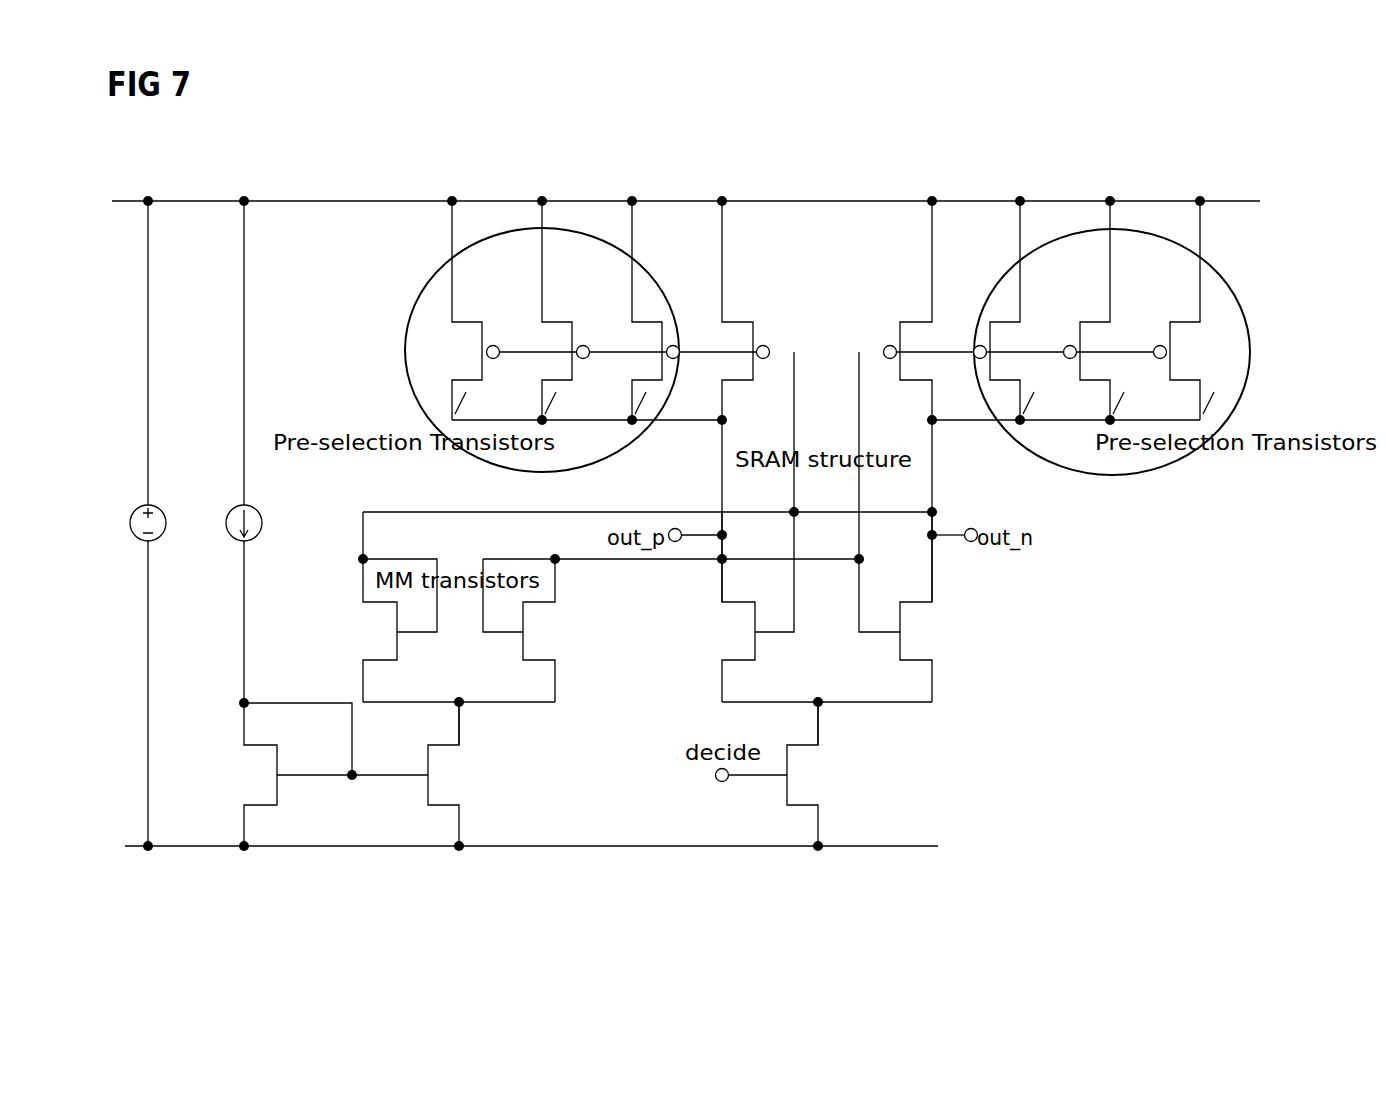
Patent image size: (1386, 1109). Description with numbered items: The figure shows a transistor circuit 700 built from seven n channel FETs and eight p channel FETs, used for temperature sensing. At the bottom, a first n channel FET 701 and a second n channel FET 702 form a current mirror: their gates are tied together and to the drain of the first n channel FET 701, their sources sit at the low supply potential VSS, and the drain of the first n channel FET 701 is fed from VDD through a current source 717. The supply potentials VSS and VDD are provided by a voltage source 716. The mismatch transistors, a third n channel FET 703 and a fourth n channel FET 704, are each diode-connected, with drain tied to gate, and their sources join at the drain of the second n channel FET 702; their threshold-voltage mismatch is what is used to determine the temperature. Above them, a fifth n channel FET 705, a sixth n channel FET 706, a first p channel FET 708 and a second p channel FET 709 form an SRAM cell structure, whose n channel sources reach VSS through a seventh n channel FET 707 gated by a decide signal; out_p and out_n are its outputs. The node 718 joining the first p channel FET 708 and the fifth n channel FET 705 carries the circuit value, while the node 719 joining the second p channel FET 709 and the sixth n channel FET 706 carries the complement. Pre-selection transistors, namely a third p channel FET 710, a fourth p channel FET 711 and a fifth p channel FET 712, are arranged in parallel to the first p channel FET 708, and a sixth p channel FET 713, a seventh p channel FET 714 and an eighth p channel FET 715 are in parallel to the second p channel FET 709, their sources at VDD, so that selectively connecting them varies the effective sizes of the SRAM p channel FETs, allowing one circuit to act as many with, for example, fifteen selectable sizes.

The transistor circuit 700 is at (1293, 148).
The first n channel FET 701 is at (245, 758).
The second n channel FET 702 is at (458, 758).
The third n channel FET 703 is at (356, 612).
The fourth n channel FET 704 is at (555, 617).
The fifth n channel FET 705 is at (715, 612).
The sixth n channel FET 706 is at (937, 615).
The seventh n channel FET 707 is at (822, 758).
The first p channel FET 708 is at (760, 330).
The second p channel FET 709 is at (897, 328).
The third p channel FET 710 is at (500, 300).
The fourth p channel FET 711 is at (592, 300).
The fifth p channel FET 712 is at (643, 305).
The sixth p channel FET 713 is at (1003, 312).
The seventh p channel FET 714 is at (1095, 312).
The eighth p channel FET 715 is at (1175, 312).
The voltage source 716 is at (196, 494).
The current source 717 is at (286, 494).
The node 718 is at (722, 535).
The node 719 is at (933, 535).